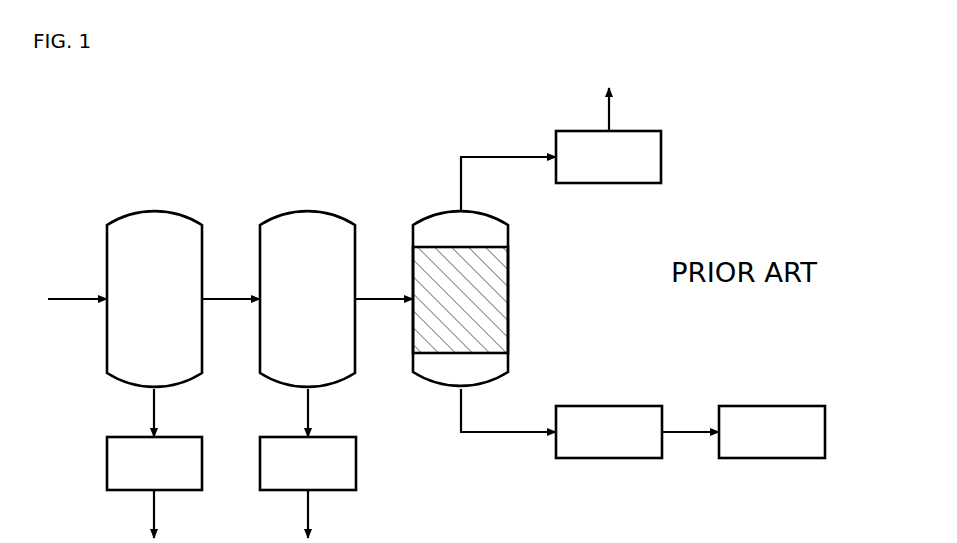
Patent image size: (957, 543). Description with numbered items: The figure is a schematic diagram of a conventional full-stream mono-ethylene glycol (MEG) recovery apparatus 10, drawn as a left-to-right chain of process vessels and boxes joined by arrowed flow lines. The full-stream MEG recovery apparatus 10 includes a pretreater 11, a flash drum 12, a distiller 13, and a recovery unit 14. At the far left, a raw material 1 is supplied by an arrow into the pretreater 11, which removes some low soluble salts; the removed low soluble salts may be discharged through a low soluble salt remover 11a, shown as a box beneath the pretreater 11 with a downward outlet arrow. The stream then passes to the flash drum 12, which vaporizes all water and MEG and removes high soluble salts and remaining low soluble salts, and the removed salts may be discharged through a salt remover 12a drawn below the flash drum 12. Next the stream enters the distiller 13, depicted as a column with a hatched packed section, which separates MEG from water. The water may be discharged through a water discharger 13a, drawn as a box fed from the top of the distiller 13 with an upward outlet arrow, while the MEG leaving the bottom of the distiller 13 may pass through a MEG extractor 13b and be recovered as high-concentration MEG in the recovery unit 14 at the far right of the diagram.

The full-stream MEG recovery apparatus 10 is at (95, 90).
The raw material 1 is at (68, 299).
The pretreater 11 is at (155, 210).
The low soluble salt remover 11a is at (172, 435).
The flash drum 12 is at (309, 208).
The salt remover 12a is at (325, 435).
The distiller 13 is at (472, 210).
The water discharger 13a is at (627, 130).
The MEG extractor 13b is at (608, 403).
The recovery unit 14 is at (770, 403).